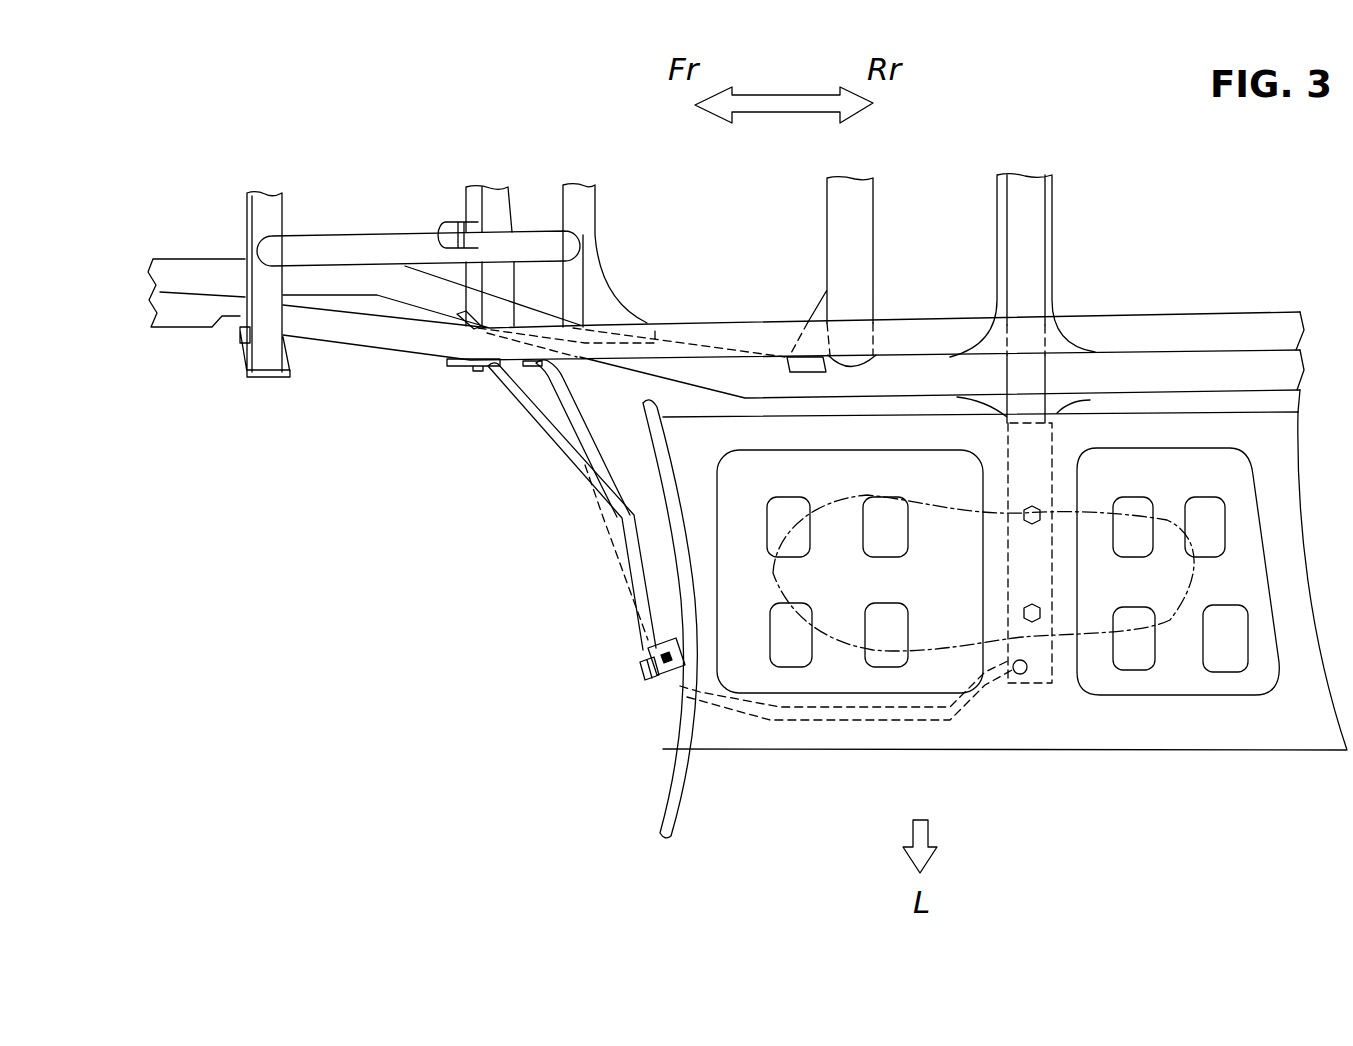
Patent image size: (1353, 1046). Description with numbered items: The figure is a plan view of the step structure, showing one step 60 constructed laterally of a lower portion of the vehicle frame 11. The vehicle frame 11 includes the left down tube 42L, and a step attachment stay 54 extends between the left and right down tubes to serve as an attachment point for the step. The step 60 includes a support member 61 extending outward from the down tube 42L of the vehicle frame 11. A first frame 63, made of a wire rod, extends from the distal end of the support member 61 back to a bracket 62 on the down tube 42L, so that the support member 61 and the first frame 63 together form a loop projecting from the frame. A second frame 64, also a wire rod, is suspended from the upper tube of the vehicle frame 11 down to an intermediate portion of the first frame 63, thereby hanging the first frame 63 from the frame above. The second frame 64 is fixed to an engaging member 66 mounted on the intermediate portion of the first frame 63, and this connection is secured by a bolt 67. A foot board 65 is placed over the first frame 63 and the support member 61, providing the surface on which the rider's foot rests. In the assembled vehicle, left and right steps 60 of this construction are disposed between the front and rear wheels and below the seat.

The vehicle frame 11 is at (413, 138).
The step attachment stay 54 is at (1055, 210).
The left down tube 42L is at (1128, 313).
The bracket 62 is at (500, 330).
The second frame 64 is at (545, 427).
The bolt 67 is at (643, 673).
The engaging member 66 is at (677, 682).
The step 60 is at (548, 690).
The first frame 63 is at (802, 720).
The support member 61 is at (1037, 683).
The foot board 65 is at (1197, 750).